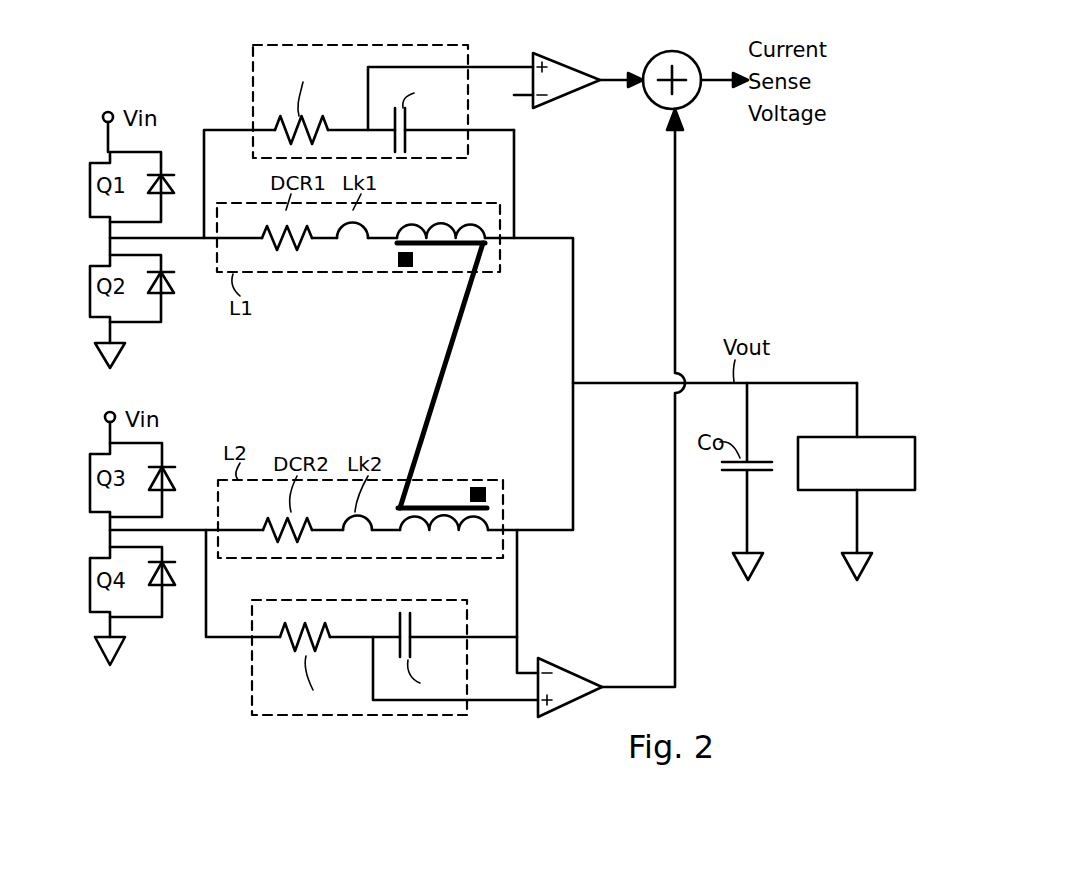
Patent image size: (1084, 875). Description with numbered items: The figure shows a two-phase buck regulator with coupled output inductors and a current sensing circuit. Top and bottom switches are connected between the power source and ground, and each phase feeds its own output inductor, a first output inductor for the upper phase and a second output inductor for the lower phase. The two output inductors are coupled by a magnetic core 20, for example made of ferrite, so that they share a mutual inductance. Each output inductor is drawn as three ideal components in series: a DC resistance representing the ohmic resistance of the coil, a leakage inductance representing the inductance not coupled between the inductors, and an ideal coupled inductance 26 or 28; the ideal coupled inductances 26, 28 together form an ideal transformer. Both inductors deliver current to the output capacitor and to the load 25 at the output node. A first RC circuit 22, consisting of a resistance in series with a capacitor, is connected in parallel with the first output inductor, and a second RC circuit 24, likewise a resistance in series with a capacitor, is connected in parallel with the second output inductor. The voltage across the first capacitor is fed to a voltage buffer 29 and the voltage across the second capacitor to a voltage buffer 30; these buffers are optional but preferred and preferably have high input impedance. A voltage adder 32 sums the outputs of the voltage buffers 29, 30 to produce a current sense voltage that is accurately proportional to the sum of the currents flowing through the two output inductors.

The magnetic core 20 is at (448, 355).
The first RC circuit 22 is at (252, 93).
The second RC circuit 24 is at (252, 682).
The load 25 is at (856, 463).
The ideal coupled inductance 26 is at (439, 210).
The ideal coupled inductance 28 is at (457, 535).
The voltage buffer 29 is at (566, 98).
The voltage buffer 30 is at (570, 666).
The voltage adder 32 is at (694, 101).